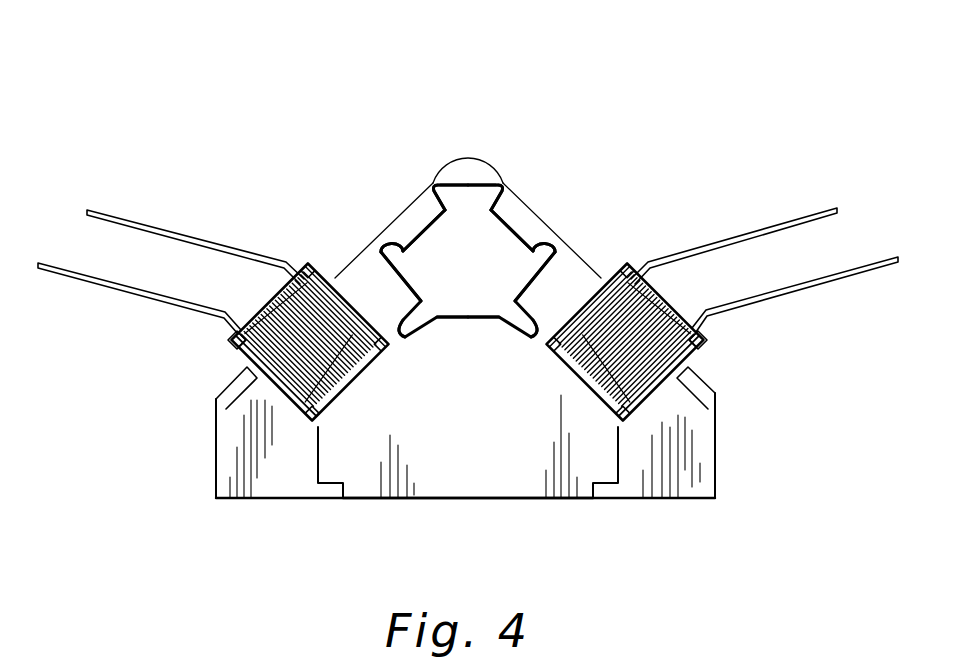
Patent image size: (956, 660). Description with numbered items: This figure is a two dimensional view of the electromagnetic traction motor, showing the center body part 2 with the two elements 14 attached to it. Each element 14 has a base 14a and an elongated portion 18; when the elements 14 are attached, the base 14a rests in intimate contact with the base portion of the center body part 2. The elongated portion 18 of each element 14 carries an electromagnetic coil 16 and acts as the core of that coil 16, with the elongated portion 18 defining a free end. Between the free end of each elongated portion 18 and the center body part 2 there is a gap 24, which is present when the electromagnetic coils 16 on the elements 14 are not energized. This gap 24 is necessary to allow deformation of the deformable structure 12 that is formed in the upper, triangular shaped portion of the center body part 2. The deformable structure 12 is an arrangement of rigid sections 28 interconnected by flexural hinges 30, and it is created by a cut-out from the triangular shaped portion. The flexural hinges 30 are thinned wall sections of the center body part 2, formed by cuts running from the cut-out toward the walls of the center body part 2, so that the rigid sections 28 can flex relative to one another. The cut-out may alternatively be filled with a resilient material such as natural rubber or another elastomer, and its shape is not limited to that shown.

The center body part 2 is at (487, 410).
The deformable structure 12 is at (462, 243).
The element 14 is at (248, 432).
The base 14a is at (265, 487).
The electromagnetic coil 16 is at (243, 355).
The elongated portion 18 is at (265, 387).
The gap 24 is at (320, 256).
The rigid section 28 is at (418, 222).
The flexural hinge 30 is at (431, 186).